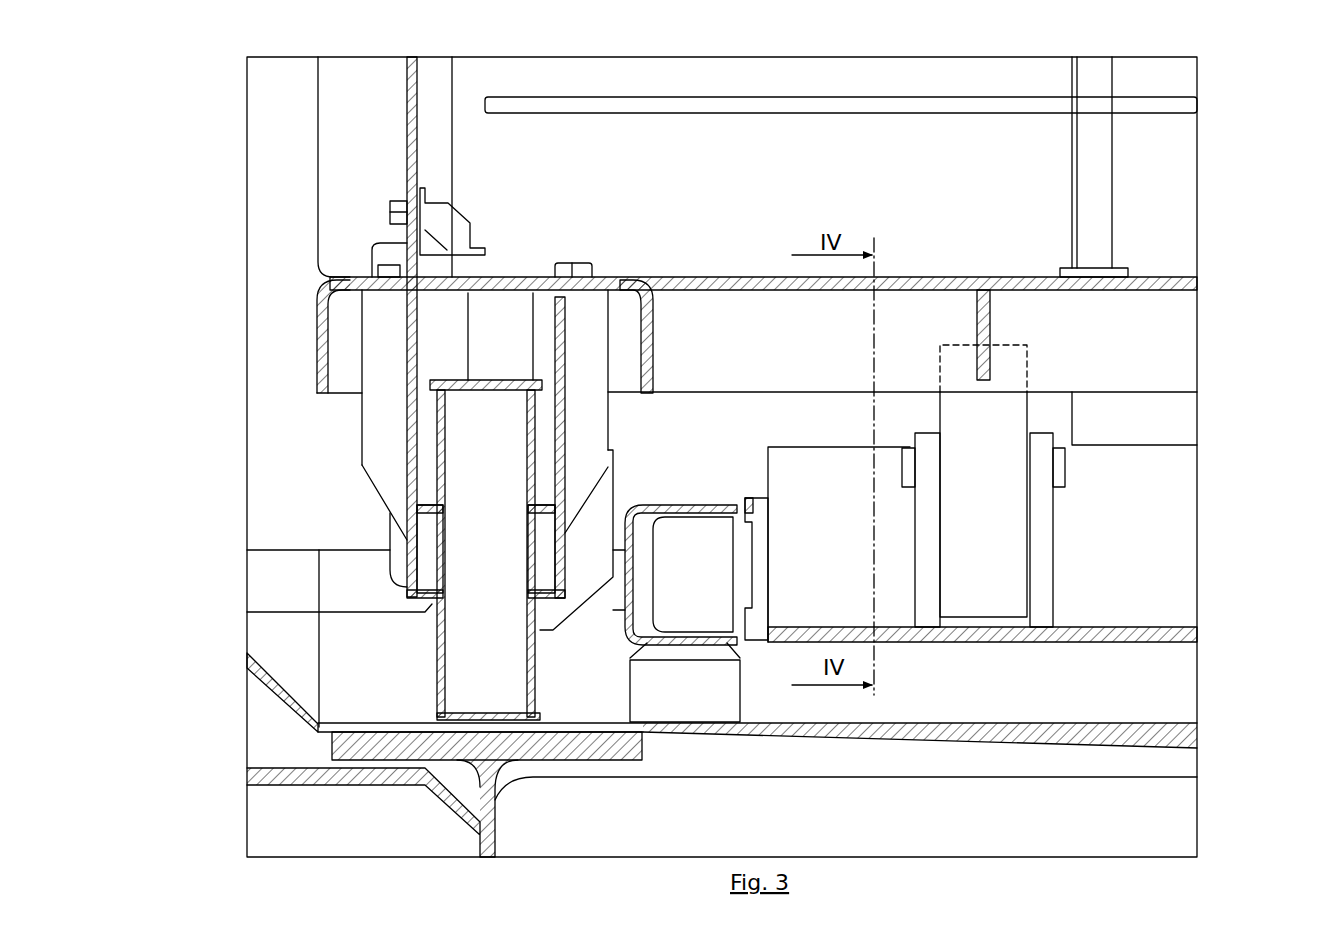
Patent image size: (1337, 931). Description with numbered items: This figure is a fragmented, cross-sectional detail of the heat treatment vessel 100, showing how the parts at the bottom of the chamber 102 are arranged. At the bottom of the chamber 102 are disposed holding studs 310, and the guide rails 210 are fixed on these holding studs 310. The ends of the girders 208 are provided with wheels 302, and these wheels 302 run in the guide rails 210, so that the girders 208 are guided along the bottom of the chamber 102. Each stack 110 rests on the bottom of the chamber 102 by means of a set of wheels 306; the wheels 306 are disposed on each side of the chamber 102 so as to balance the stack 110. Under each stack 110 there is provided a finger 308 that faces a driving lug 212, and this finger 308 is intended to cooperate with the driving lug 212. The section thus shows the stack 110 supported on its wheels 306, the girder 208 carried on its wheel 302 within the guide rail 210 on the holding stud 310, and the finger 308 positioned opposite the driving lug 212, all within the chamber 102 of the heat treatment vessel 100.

The heat treatment vessel 100 is at (1240, 159).
The stack 110 is at (198, 178).
The chamber 102 is at (265, 668).
The girder 208 is at (1153, 522).
The guide rail 210 is at (655, 505).
The driving lug 212 is at (1023, 412).
The wheel 302 is at (748, 500).
The wheel 306 is at (433, 663).
The finger 308 is at (975, 320).
The holding stud 310 is at (683, 690).